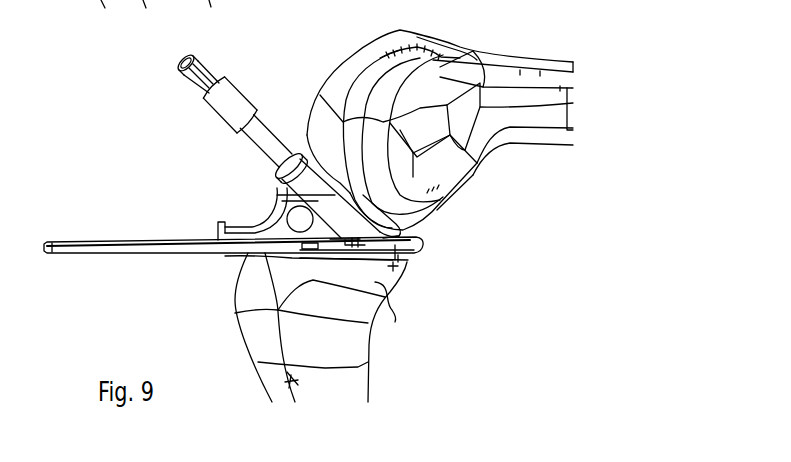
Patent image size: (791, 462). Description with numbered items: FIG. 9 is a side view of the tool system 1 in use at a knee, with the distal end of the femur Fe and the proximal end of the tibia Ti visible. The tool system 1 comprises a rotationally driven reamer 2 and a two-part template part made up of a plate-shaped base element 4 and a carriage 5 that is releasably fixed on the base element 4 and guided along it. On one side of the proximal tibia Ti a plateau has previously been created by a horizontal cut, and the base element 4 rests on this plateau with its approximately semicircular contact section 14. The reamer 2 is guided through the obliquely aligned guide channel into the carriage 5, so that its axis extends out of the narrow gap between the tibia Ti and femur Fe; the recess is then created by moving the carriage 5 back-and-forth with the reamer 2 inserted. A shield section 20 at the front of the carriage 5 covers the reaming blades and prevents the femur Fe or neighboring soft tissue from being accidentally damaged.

The tool system 1 is at (156, 155).
The reamer 2 is at (271, 120).
The base element 4 is at (195, 257).
The carriage 5 is at (258, 218).
The contact section 14 is at (410, 250).
The shield section 20 is at (413, 232).
The femur Fe is at (353, 55).
The tibia Ti is at (331, 327).